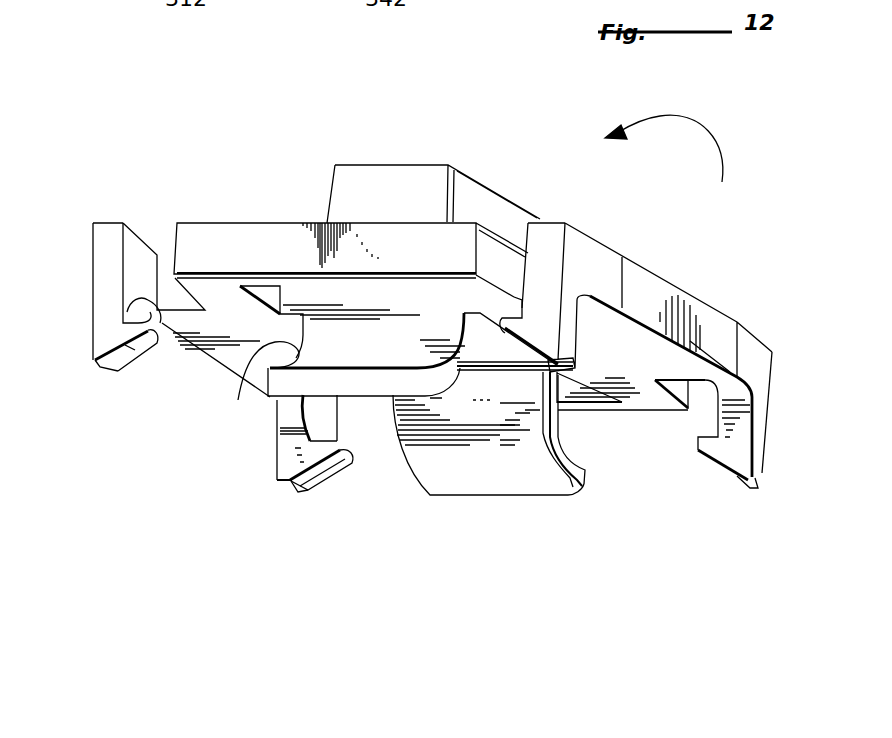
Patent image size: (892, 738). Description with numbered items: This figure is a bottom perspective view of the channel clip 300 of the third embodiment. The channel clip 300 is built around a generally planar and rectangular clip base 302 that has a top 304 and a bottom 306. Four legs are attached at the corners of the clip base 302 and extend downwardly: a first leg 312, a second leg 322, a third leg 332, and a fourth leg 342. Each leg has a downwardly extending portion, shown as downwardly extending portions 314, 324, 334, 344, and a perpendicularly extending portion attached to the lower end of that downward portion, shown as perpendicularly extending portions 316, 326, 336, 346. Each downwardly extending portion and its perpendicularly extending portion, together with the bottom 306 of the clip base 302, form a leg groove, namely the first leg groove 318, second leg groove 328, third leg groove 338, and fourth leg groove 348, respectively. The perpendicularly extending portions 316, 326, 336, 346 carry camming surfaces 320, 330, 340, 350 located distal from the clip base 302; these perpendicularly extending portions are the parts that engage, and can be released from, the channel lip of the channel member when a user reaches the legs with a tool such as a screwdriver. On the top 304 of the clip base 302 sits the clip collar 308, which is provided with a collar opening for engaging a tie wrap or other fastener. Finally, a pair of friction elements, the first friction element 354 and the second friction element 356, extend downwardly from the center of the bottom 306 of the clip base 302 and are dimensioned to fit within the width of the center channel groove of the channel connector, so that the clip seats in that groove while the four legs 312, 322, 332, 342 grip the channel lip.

The channel clip 300 is at (679, 155).
The clip base 302 is at (637, 273).
The top 304 is at (198, 223).
The bottom 306 is at (233, 310).
The clip collar 308 is at (372, 164).
The first leg 312 is at (82, 354).
The downwardly extending portion 314 is at (93, 302).
The perpendicularly extending portion 316 is at (103, 366).
The first leg groove 318 is at (165, 338).
The camming surface 320 is at (135, 355).
The second leg 322 is at (262, 480).
The downwardly extending portion 324 is at (275, 447).
The perpendicularly extending portion 326 is at (295, 490).
The second leg groove 328 is at (323, 432).
The camming surface 330 is at (328, 473).
The third leg 332 is at (775, 485).
The downwardly extending portion 334 is at (772, 352).
The perpendicularly extending portion 336 is at (758, 488).
The third leg groove 338 is at (710, 438).
The camming surface 340 is at (748, 478).
The fourth leg 342 is at (573, 360).
The downwardly extending portion 344 is at (577, 338).
The perpendicularly extending portion 346 is at (573, 373).
The fourth leg groove 348 is at (512, 313).
The camming surface 350 is at (533, 342).
The first friction element 354 is at (268, 345).
The second friction element 356 is at (475, 483).